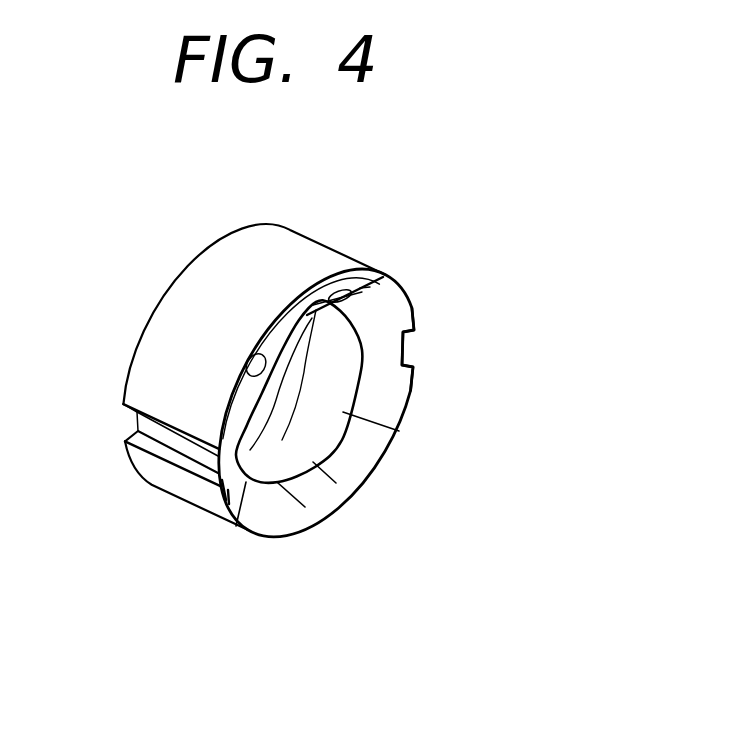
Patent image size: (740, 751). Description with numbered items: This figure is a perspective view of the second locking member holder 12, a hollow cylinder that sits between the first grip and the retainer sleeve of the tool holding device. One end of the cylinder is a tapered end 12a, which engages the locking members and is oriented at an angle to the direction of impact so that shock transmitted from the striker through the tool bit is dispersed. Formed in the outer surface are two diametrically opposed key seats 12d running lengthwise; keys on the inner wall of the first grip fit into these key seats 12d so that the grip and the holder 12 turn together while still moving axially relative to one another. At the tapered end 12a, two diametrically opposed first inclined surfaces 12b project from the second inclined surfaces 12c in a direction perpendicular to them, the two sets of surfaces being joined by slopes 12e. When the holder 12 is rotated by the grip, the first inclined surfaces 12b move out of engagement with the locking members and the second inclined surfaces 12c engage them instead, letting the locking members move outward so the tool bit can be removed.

The second locking member holder 12 is at (247, 252).
The tapered end 12a is at (422, 313).
The first inclined surfaces 12b is at (343, 292).
The second inclined surfaces 12c is at (382, 403).
The key seats 12d is at (405, 345).
The slopes 12e is at (380, 272).